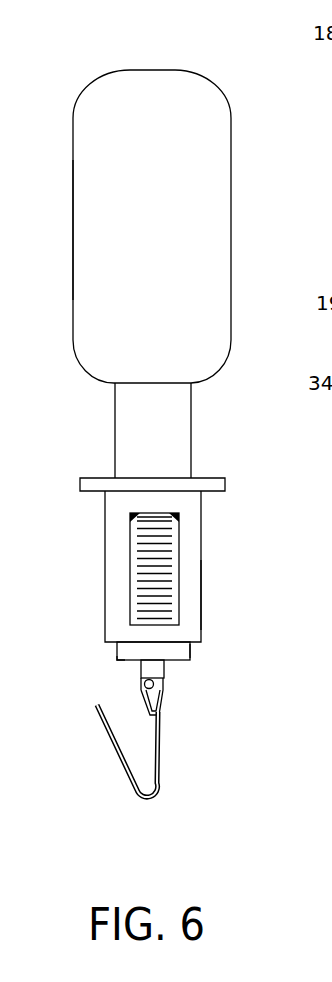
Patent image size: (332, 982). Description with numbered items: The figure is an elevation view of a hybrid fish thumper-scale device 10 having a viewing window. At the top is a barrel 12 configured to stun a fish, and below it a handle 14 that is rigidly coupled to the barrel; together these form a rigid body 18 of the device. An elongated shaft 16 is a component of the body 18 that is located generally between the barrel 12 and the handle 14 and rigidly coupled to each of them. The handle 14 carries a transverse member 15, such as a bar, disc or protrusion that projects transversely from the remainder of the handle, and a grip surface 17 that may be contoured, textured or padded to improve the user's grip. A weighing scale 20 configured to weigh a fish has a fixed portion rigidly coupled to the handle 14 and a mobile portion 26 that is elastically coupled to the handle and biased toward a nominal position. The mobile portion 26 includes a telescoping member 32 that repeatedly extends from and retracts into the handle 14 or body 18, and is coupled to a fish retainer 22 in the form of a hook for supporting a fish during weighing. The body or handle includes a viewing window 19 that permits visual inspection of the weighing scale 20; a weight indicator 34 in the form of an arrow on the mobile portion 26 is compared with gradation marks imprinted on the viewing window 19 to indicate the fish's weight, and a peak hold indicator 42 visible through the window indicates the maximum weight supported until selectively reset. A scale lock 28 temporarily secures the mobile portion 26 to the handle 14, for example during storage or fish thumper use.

The hybrid fish thumper-scale device 10 is at (95, 40).
The barrel 12 is at (73, 167).
The handle 14 is at (101, 548).
The transverse member 15 is at (225, 482).
The shaft 16 is at (114, 425).
The grip surface 17 is at (203, 593).
The body 18 is at (70, 208).
The viewing window 19 is at (138, 567).
The weighing scale 20 is at (166, 668).
The fish retainer 22 is at (159, 776).
The mobile portion 26 is at (117, 645).
The scale lock 28 is at (196, 650).
The telescoping member 32 is at (117, 658).
The weight indicator 34 is at (132, 518).
The peak hold indicator 42 is at (178, 518).